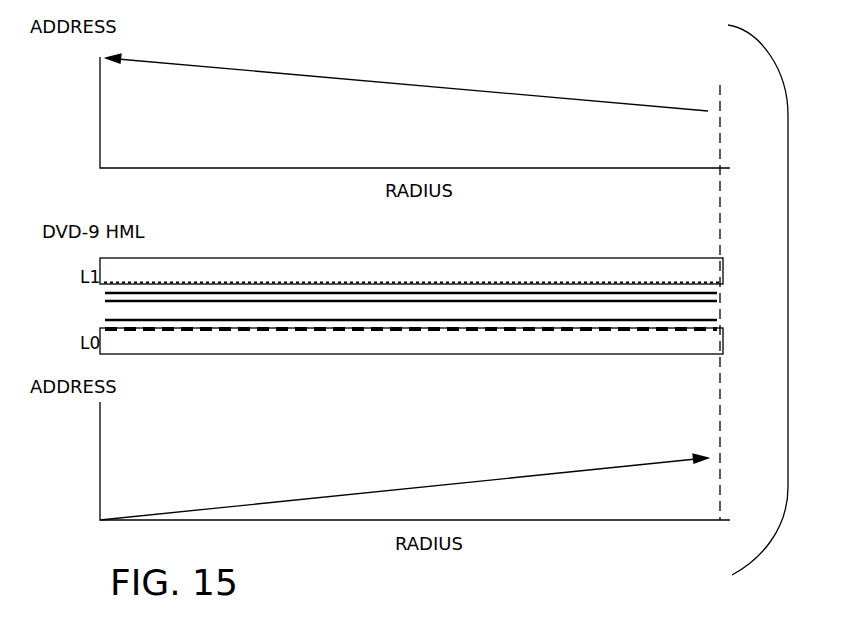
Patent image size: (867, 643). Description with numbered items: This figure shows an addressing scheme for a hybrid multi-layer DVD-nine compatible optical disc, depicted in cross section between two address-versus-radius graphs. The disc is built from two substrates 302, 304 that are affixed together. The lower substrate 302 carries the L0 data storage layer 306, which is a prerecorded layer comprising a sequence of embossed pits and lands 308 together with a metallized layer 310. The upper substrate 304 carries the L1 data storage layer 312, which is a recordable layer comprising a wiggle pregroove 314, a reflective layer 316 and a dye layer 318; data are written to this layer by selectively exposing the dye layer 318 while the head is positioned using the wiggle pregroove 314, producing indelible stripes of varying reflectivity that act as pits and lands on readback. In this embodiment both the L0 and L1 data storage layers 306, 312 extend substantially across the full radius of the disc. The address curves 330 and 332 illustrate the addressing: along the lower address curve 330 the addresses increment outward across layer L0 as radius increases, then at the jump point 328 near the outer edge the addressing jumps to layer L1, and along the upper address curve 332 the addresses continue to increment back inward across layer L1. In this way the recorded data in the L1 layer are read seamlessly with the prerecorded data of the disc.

The substrate 302 is at (122, 345).
The substrate 304 is at (259, 270).
The data storage layer 306 is at (80, 318).
The embossed pits and lands 308 is at (237, 331).
The metallized layer 310 is at (425, 320).
The data storage layer 312 is at (80, 296).
The wiggle pregroove 314 is at (576, 283).
The reflective layer 316 is at (510, 294).
The dye layer 318 is at (360, 302).
The jump point 328 is at (731, 321).
The address curve 330 is at (535, 473).
The address curve 332 is at (556, 97).